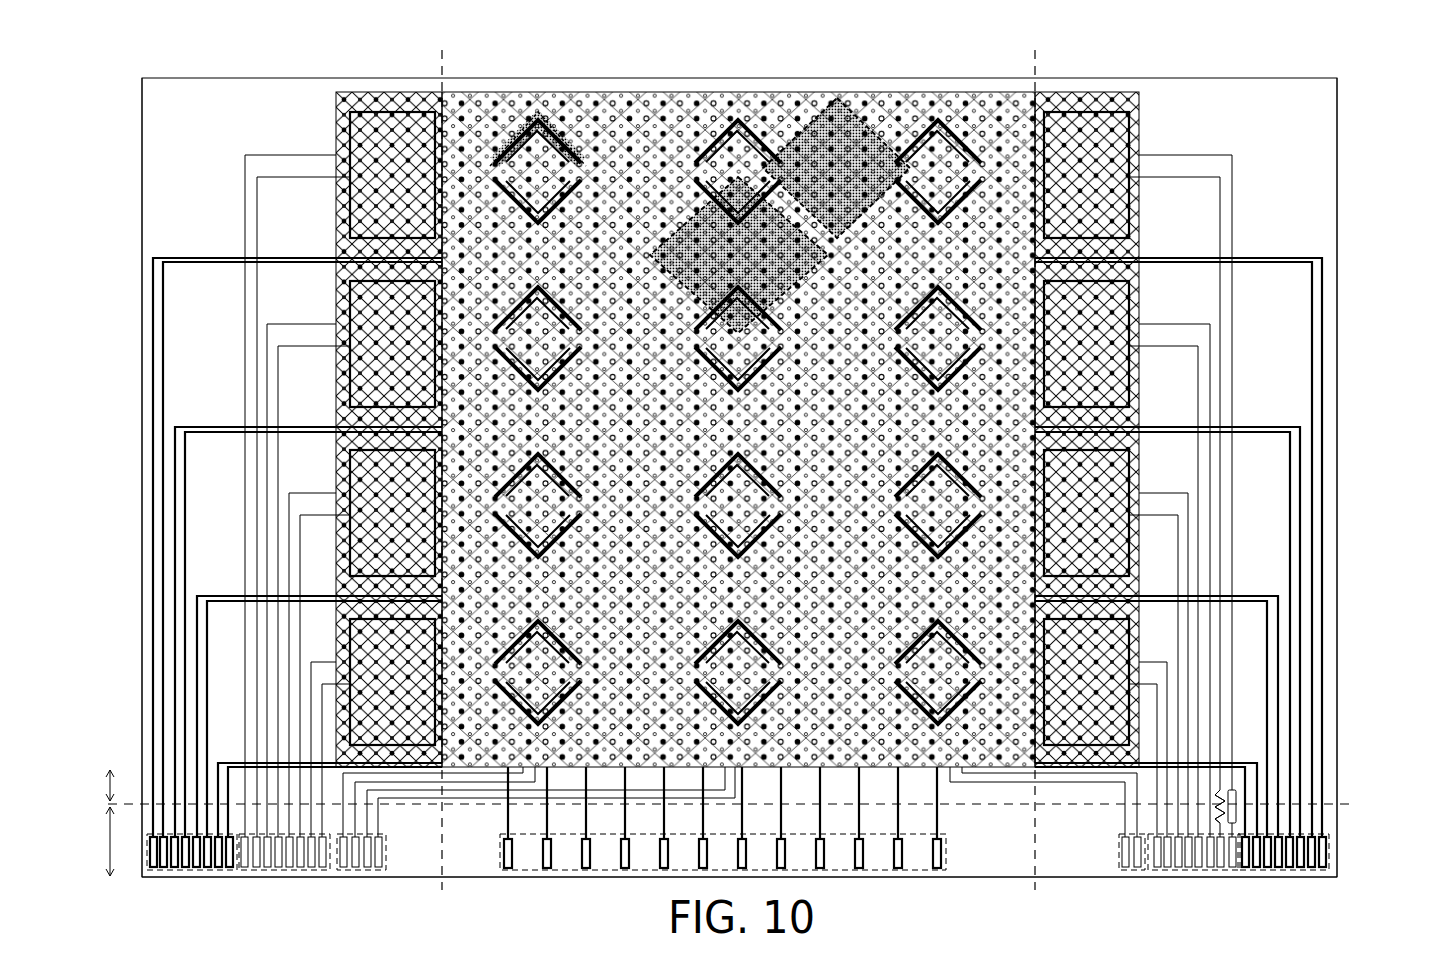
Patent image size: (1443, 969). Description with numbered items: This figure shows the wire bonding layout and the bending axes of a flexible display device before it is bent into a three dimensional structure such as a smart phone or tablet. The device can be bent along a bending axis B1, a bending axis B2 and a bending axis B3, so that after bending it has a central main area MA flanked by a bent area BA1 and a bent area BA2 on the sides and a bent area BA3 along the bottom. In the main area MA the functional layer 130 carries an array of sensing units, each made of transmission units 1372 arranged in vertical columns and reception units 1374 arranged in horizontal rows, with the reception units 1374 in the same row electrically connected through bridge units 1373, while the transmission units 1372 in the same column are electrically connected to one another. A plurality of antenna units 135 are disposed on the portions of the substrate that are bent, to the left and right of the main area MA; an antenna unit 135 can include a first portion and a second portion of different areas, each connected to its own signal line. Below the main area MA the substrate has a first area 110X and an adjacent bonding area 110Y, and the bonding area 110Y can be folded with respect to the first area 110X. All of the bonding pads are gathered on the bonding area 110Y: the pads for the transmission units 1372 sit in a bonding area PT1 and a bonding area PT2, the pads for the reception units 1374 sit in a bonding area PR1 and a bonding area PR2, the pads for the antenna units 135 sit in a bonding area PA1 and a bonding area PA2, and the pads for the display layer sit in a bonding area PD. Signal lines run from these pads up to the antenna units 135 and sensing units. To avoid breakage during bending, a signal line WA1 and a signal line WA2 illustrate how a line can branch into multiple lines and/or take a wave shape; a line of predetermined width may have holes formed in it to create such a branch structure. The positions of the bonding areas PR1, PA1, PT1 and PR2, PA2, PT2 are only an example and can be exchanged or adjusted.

The antenna unit 135 is at (340, 95).
The functional layer 130 is at (737, 175).
The transmission unit 1372 is at (782, 100).
The bridge unit 1373 is at (520, 100).
The reception unit 1374 is at (912, 100).
The main area MA is at (1035, 74).
The bent area BA1 is at (185, 116).
The bent area BA2 is at (1293, 116).
The bent area BA3 is at (462, 878).
The bending axis B1 is at (438, 454).
The bending axis B2 is at (1032, 454).
The bending axis B3 is at (750, 807).
The bonding area PR1 is at (184, 878).
The bonding area PA1 is at (273, 878).
The bonding area PT1 is at (361, 878).
The bonding area PD is at (574, 878).
The bonding area PT2 is at (1125, 878).
The bonding area PA2 is at (1200, 878).
The bonding area PR2 is at (1290, 878).
The signal line WA1 is at (1238, 795).
The signal line WA2 is at (1217, 820).
The first area 110X is at (103, 765).
The bonding area 110Y is at (104, 841).